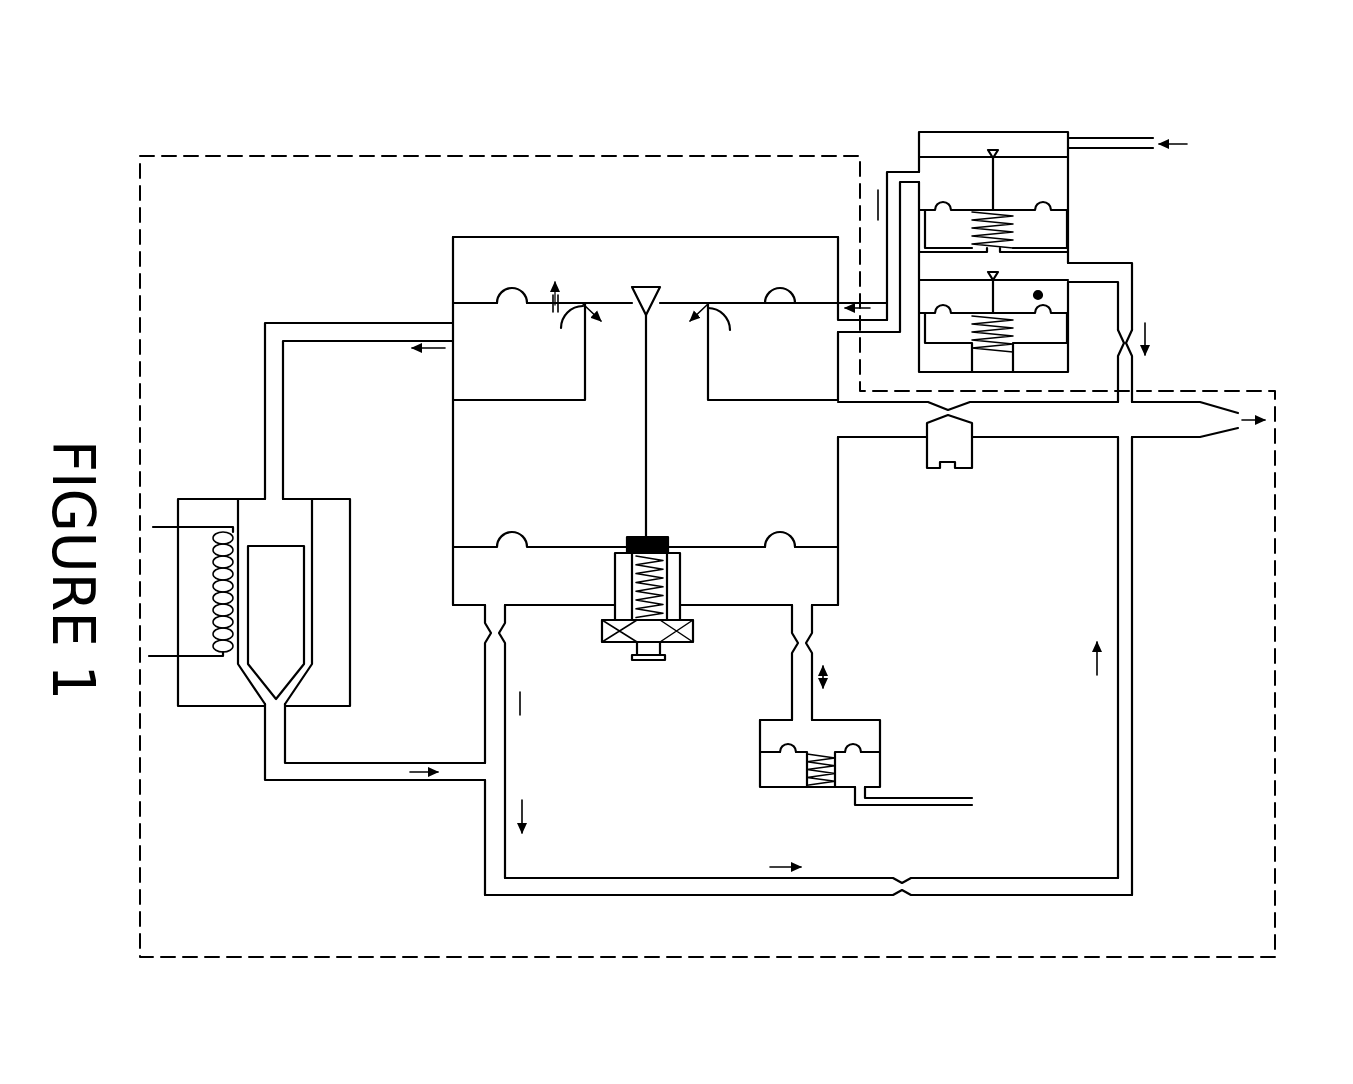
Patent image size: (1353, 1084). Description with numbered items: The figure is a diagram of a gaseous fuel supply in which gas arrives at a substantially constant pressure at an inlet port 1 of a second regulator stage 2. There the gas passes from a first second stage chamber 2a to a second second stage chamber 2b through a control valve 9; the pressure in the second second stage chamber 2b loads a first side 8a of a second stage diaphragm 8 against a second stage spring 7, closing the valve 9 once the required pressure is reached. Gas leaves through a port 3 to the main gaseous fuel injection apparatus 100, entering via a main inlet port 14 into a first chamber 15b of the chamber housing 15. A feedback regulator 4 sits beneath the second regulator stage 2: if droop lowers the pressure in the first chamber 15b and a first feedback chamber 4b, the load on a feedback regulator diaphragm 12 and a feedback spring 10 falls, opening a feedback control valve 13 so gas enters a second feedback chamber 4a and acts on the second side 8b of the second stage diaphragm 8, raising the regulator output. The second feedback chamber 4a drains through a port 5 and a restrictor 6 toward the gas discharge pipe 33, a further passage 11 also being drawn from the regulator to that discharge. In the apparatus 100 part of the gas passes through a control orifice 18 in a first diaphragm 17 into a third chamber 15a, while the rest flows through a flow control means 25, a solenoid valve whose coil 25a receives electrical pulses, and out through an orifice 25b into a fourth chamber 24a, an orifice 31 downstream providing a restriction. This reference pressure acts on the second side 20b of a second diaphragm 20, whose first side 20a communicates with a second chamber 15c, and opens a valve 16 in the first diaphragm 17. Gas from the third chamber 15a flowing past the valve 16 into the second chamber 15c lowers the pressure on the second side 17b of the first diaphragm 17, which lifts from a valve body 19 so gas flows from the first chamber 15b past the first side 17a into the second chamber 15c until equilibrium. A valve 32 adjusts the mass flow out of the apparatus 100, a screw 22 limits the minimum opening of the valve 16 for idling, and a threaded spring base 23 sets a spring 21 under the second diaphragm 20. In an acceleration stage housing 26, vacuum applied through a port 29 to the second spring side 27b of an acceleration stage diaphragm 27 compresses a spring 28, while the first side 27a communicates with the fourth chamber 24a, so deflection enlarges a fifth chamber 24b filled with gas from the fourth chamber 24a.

The main gaseous fuel injection apparatus 100 is at (707, 521).
The inlet port 1 is at (1157, 100).
The second regulator stage 2 is at (993, 167).
The first second stage chamber 2a is at (993, 145).
The second second stage chamber 2b is at (993, 192).
The port 3 is at (873, 211).
The second regulating valve 4 is at (1108, 266).
The second feedback chamber 4a is at (971, 285).
The first feedback chamber 4b is at (993, 330).
The port 5 is at (1185, 285).
The restrictor 6 is at (1188, 341).
The second stage spring 7 is at (1077, 203).
The second stage diaphragm 8 is at (1044, 155).
The first side of second stage diaphragm 8a is at (969, 184).
The second side of second stage diaphragm 8b is at (993, 235).
The control valve 9 is at (951, 113).
The feedback spring 10 is at (1113, 349).
The return passage 11 is at (1133, 634).
The feedback regulator diaphragm 12 is at (1167, 253).
The feedback control valve 13 is at (1066, 244).
The main inlet port 14 is at (830, 216).
The valve housing 15 is at (670, 357).
The third chamber 15a is at (645, 258).
The first chamber 15b is at (645, 351).
The second chamber 15c is at (677, 426).
The valve 16 is at (663, 215).
The first diaphragm 17 is at (660, 252).
The first side of first diaphragm 17a is at (706, 378).
The second side of first diaphragm 17b is at (539, 247).
The control orifice 18 is at (479, 242).
The valve body 19 is at (646, 203).
The second diaphragm 20 is at (499, 475).
The first side of second diaphragm 20a is at (753, 515).
The second side of second diaphragm 20b is at (766, 557).
The spring 21 is at (505, 543).
The screw 22 is at (605, 657).
The threaded spring base 23 is at (591, 691).
The fourth chamber 24a is at (645, 734).
The fifth chamber 24b is at (820, 758).
The flow control means 25 is at (316, 602).
The coil 25a is at (191, 530).
The orifice 25b is at (327, 742).
The valve housing 26 is at (860, 716).
The acceleration stage diaphragm 27 is at (916, 718).
The first side of acceleration stage diaphragm 27a is at (738, 695).
The second spring side of acceleration stage diaphragm 27b is at (725, 785).
The spring 28 is at (897, 755).
The port 29 is at (902, 701).
The orifice 31 is at (808, 906).
The valve 32 is at (988, 463).
The gas discharge pipe 33 is at (1238, 446).